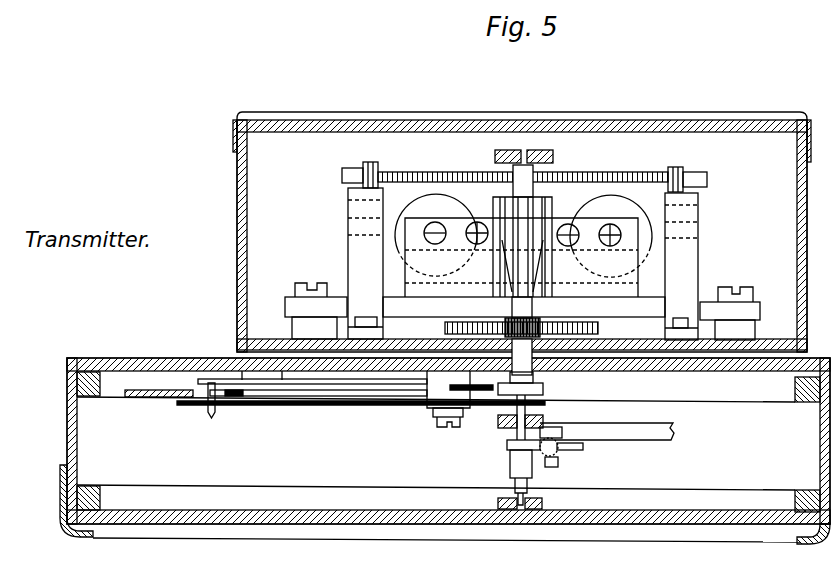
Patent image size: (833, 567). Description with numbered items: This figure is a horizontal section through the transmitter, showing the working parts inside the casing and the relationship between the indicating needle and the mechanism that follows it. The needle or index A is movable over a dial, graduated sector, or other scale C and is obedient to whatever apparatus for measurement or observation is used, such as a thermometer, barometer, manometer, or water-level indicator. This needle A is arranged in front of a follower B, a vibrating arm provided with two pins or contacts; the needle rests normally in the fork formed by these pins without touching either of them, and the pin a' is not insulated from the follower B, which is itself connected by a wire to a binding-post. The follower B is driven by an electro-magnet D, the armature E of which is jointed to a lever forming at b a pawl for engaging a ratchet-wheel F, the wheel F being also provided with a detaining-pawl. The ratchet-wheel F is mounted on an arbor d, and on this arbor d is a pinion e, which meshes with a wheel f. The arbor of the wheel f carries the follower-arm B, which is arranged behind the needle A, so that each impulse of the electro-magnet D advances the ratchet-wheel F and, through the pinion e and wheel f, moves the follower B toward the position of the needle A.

The armature E is at (652, 250).
The electro-magnet D is at (523, 245).
The ratchet-wheel F is at (523, 165).
The pawl b is at (523, 177).
The arbor d is at (522, 247).
The pinion e is at (536, 320).
The wheel f is at (525, 333).
The follower B is at (312, 386).
The needle A is at (319, 404).
The scale C is at (156, 398).
The pin a' is at (217, 409).